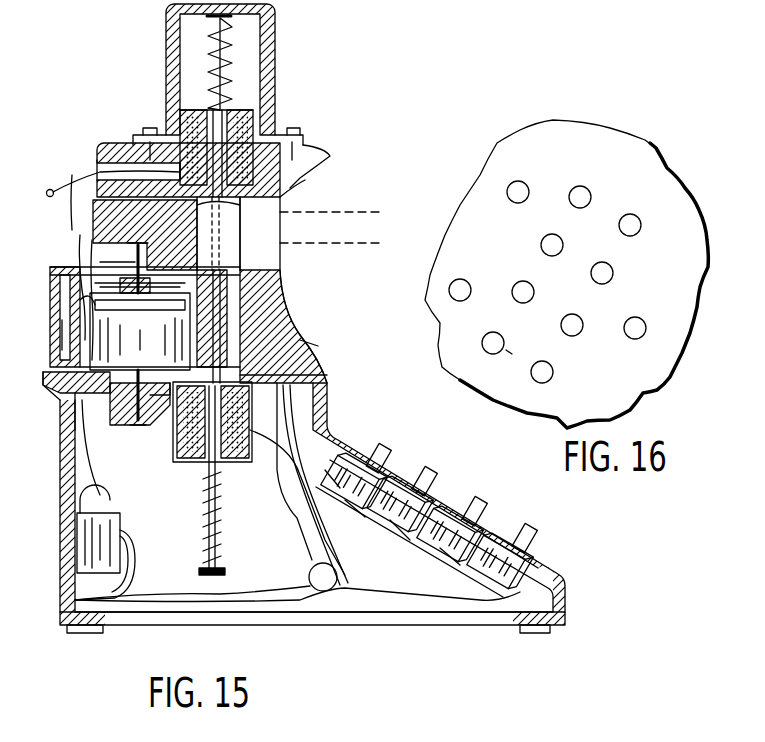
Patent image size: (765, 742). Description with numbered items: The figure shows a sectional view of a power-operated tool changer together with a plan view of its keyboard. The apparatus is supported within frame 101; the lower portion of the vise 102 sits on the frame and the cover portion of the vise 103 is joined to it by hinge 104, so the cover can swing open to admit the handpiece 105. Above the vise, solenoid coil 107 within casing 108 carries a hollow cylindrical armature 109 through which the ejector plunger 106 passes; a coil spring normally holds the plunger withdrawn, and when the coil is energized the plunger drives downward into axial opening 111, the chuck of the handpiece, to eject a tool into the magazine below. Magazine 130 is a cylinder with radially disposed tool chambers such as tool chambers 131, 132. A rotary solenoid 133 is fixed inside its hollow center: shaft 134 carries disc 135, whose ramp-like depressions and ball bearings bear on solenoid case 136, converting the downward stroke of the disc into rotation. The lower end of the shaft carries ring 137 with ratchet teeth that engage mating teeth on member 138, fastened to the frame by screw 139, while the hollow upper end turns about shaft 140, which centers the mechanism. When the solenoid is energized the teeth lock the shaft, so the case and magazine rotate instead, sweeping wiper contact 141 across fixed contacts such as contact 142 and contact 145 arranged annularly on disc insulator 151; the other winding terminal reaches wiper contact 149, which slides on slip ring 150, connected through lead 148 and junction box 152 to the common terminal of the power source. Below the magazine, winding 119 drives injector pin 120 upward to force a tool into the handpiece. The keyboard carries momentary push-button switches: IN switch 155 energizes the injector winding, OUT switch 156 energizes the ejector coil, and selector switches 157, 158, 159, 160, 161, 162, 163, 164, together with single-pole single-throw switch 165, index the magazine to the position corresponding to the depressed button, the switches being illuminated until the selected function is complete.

In FIG. 15, the frame 101 is at (306, 327).
In FIG. 15, the lower portion of the vise 102 is at (285, 258).
In FIG. 15, the cover portion of the vise 103 is at (292, 178).
In FIG. 15, the hinge 104 is at (50, 197).
In FIG. 15, the handpiece 105 is at (351, 212).
In FIG. 15, the ejector plunger 106 is at (222, 74).
In FIG. 15, the solenoid coil 107 is at (226, 45).
In FIG. 15, the casing 108 is at (276, 100).
In FIG. 15, the hollow cylindrical armature 109 is at (198, 110).
In FIG. 15, the axial opening 111 is at (222, 240).
In FIG. 15, the winding 119 is at (182, 465).
In FIG. 15, the injector pin 120 is at (322, 366).
In FIG. 15, the magazine 130 is at (50, 293).
In FIG. 15, the tool chamber 131 is at (64, 340).
In FIG. 15, the tool chamber 132 is at (314, 345).
In FIG. 15, the rotary solenoid 133 is at (110, 410).
In FIG. 15, the shaft 134 is at (152, 298).
In FIG. 15, the disc 135 is at (80, 305).
In FIG. 15, the solenoid case 136 is at (157, 340).
In FIG. 15, the ring 137 is at (154, 412).
In FIG. 15, the member 138 is at (136, 412).
In FIG. 15, the screw 139 is at (132, 430).
In FIG. 15, the shaft 140 is at (105, 262).
In FIG. 15, the wiper contact 141 is at (78, 240).
In FIG. 15, the contact 142 is at (90, 250).
In FIG. 15, the contact 145 is at (213, 240).
In FIG. 15, the lead 148 is at (66, 458).
In FIG. 15, the wiper contact 149 is at (70, 372).
In FIG. 15, the slip ring 150 is at (64, 395).
In FIG. 15, the disc insulator 151 is at (150, 240).
In FIG. 15, the junction box 152 is at (118, 524).
In FIG. 16, the IN switch 155 is at (460, 279).
In FIG. 15, the OUT switch 156 is at (378, 430).
In FIG. 16, the OUT switch 156 is at (522, 181).
In FIG. 16, the selector push-button switch 157 is at (493, 332).
In FIG. 16, the selector push-button switch 158 is at (523, 281).
In FIG. 15, the selector push-button switch 159 is at (428, 472).
In FIG. 16, the selector push-button switch 159 is at (552, 234).
In FIG. 16, the selector push-button switch 160 is at (580, 186).
In FIG. 16, the selector push-button switch 161 is at (542, 361).
In FIG. 16, the selector push-button switch 162 is at (572, 314).
In FIG. 15, the selector push-button switch 163 is at (481, 502).
In FIG. 16, the selector push-button switch 163 is at (602, 262).
In FIG. 16, the selector push-button switch 164 is at (631, 214).
In FIG. 15, the single-pole single-throw switch 165 is at (528, 529).
In FIG. 16, the single-pole single-throw switch 165 is at (638, 317).